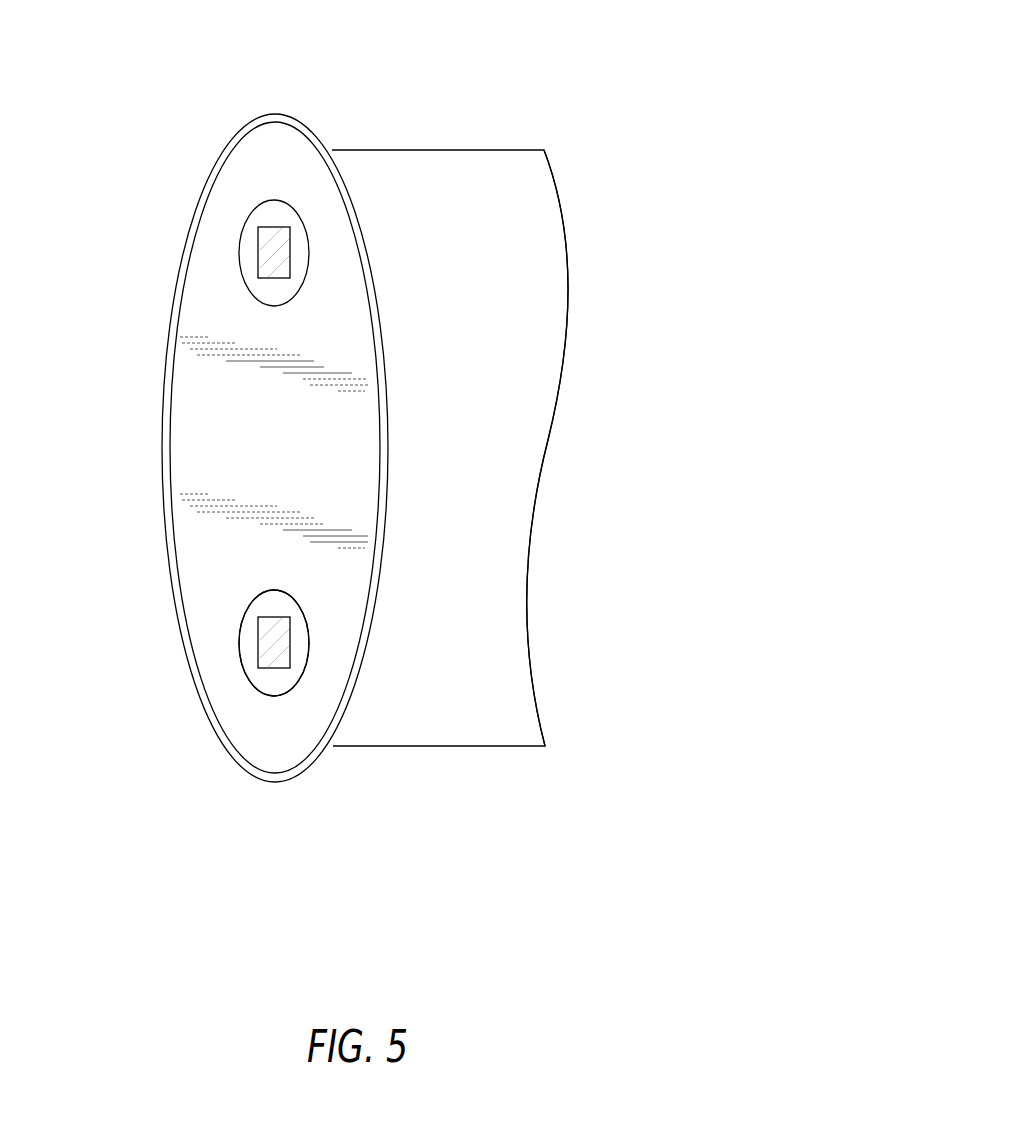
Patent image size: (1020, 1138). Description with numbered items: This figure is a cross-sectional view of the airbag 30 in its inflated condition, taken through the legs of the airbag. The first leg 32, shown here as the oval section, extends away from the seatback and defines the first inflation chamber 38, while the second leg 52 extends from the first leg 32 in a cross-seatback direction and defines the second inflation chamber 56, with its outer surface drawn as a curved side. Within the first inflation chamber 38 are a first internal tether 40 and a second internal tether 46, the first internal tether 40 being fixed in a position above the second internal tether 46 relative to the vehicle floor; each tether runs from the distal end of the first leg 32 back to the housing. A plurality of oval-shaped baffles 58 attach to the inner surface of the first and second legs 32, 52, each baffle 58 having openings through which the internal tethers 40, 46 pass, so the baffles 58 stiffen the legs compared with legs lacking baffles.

The airbag 30 is at (591, 80).
The first leg 32 is at (156, 280).
The first inflation chamber 38 is at (266, 680).
The first internal tether 40 is at (275, 227).
The second internal tether 46 is at (275, 617).
The second leg 52 is at (437, 143).
The second inflation chamber 56 is at (554, 440).
The baffles 58 is at (207, 423).